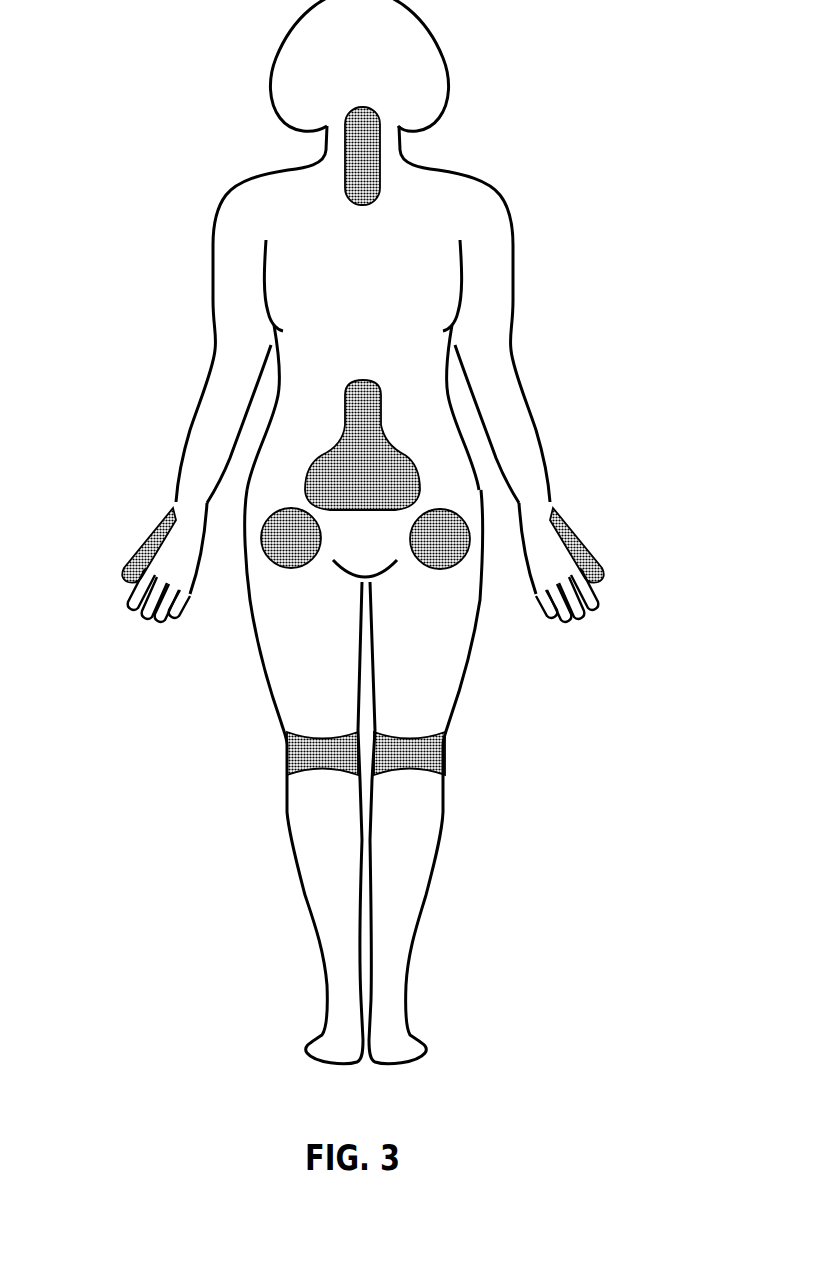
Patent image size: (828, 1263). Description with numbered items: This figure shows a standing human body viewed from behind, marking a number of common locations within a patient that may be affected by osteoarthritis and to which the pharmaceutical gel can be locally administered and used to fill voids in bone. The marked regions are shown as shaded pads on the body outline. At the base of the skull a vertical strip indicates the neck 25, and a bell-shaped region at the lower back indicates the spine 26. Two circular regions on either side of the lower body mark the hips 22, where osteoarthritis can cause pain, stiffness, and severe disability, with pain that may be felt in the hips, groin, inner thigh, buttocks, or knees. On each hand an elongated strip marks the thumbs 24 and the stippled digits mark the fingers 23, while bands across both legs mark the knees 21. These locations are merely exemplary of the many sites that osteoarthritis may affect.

The knees 21 is at (299, 757).
The hips 22 is at (292, 533).
The fingers 23 is at (152, 617).
The thumbs 24 is at (142, 550).
The neck 25 is at (368, 160).
The spine 26 is at (385, 452).